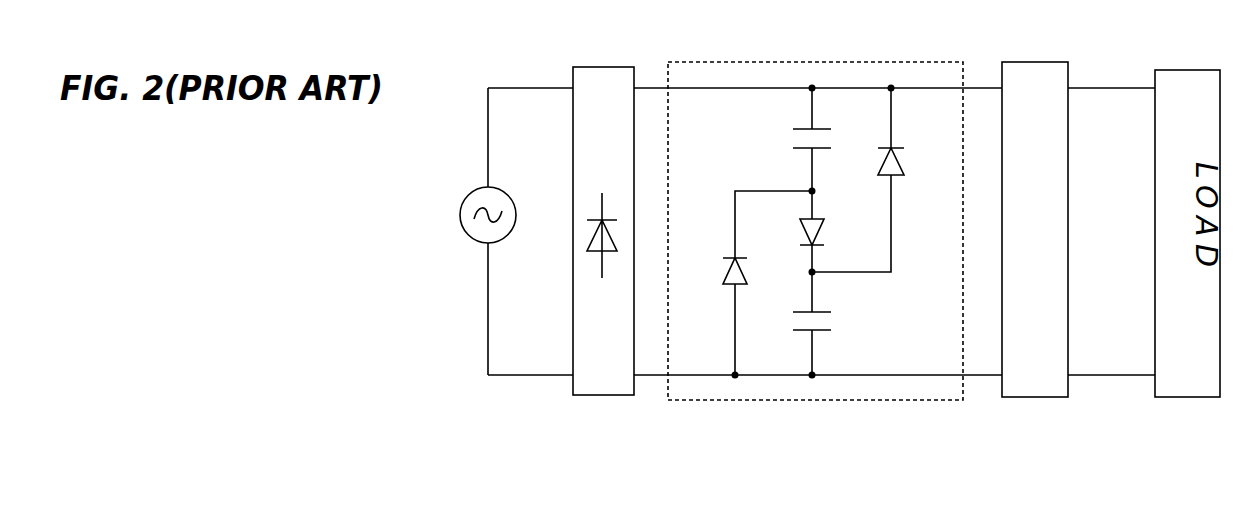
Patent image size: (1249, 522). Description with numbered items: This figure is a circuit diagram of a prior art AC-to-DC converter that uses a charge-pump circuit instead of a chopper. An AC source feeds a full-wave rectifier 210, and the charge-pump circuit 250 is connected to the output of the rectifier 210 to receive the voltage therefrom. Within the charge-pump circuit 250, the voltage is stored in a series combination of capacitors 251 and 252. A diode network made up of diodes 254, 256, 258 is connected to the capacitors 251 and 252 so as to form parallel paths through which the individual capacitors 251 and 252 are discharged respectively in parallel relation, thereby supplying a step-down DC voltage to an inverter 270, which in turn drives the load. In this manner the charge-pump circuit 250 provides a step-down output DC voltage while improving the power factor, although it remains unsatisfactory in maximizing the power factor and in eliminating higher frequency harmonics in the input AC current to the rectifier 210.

The full-wave rectifier 210 is at (573, 65).
The charge-pump circuit 250 is at (668, 62).
The capacitor 251 is at (788, 137).
The capacitor 252 is at (828, 323).
The diode 254 is at (825, 227).
The diode 256 is at (718, 273).
The diode 258 is at (898, 182).
The inverter 270 is at (1005, 62).